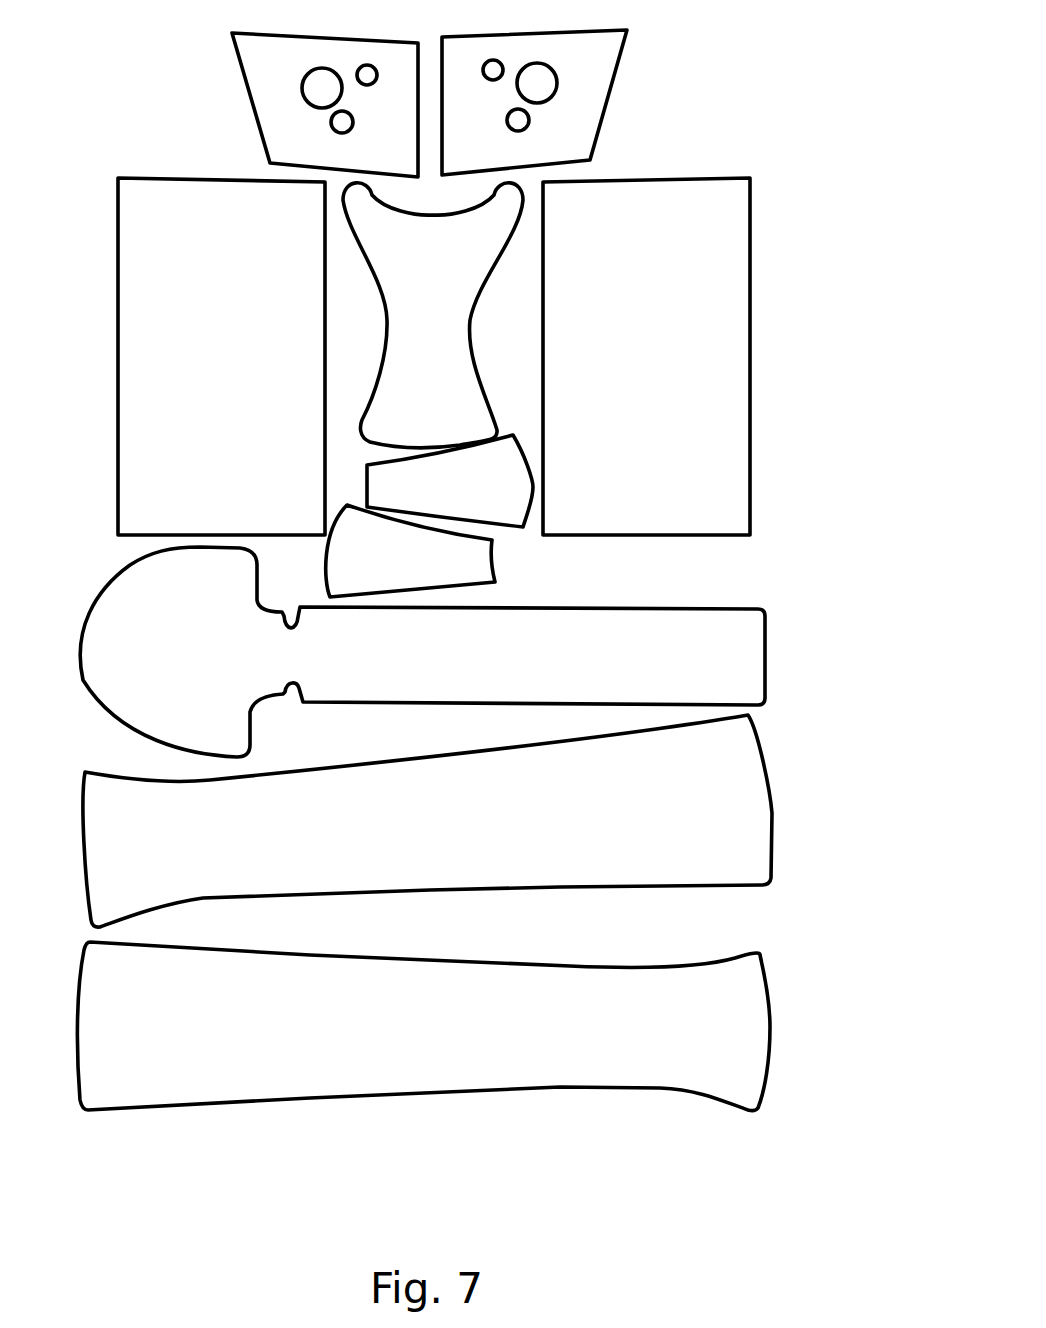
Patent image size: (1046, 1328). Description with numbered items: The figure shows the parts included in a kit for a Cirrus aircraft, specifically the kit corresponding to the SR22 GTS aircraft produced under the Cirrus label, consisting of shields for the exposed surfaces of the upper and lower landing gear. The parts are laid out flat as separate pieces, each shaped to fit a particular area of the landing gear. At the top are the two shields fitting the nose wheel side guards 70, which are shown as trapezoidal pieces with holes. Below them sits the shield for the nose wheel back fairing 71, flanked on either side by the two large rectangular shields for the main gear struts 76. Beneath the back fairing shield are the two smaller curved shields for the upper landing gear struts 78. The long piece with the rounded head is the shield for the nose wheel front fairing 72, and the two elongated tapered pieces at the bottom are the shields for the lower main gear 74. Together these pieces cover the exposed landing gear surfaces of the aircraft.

The nose wheel side guard shields 70 is at (613, 77).
The nose wheel back fairing shield 71 is at (466, 313).
The nose wheel front fairing shield 72 is at (767, 651).
The lower main gear shields 74 is at (775, 802).
The main gear strut shields 76 is at (118, 337).
The upper landing gear strut shields 78 is at (510, 527).